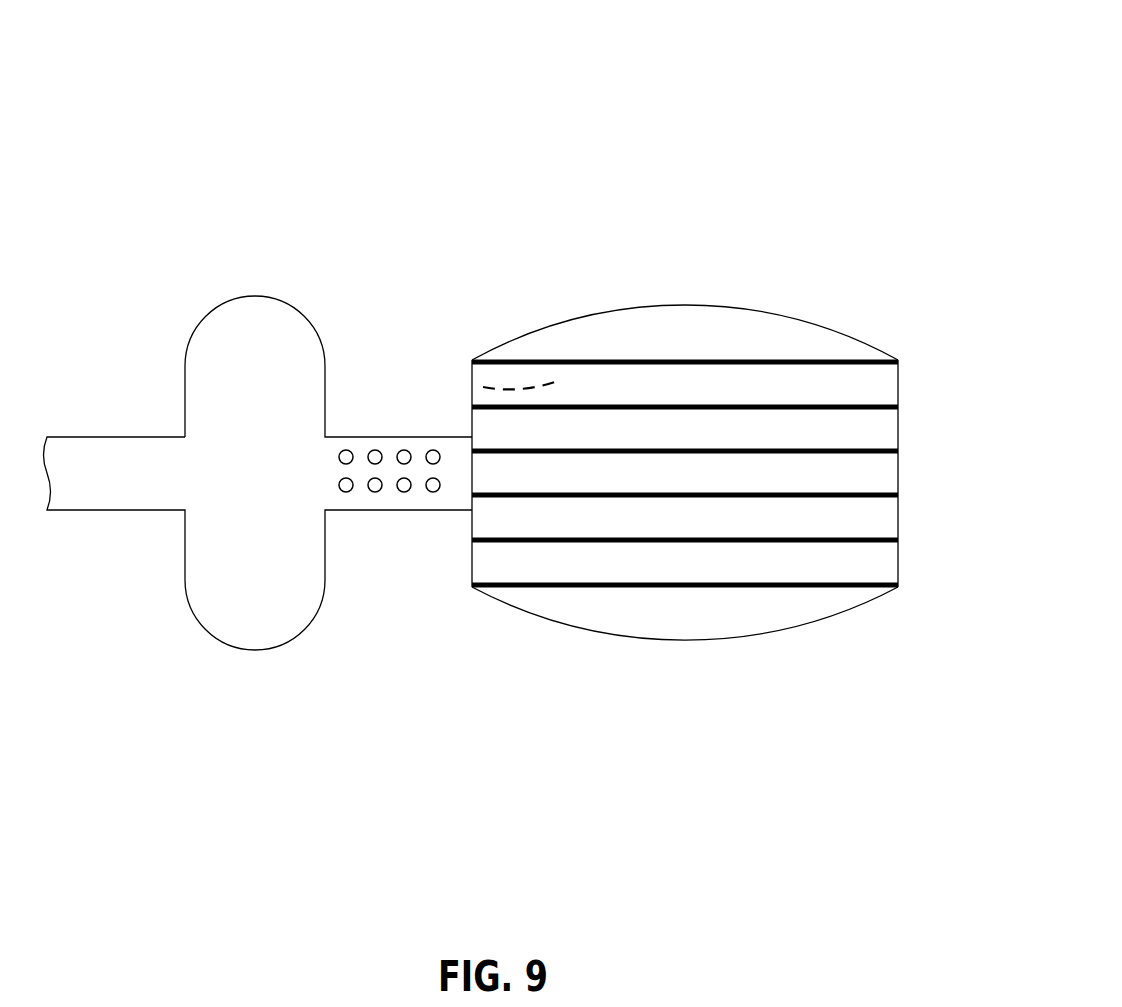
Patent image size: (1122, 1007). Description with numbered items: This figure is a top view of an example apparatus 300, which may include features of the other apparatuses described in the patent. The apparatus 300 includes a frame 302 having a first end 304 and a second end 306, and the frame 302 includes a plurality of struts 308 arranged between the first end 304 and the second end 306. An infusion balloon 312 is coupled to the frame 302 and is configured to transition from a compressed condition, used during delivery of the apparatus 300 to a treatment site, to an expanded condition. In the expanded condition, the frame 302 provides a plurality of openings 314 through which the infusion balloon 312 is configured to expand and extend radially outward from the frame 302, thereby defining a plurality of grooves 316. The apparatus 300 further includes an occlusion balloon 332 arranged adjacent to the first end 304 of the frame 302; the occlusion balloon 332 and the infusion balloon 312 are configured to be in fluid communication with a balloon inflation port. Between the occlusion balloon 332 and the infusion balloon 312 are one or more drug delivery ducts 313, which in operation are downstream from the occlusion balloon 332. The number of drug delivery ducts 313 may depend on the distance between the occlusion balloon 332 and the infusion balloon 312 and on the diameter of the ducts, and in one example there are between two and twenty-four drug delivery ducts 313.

The apparatus 300 is at (738, 104).
The frame 302 is at (898, 425).
The first end 304 is at (463, 554).
The second end 306 is at (908, 512).
The struts 308 is at (667, 350).
The infusion balloon 312 is at (757, 328).
The drug delivery ducts 313 is at (398, 436).
The openings 314 is at (480, 385).
The grooves 316 is at (870, 388).
The occlusion balloon 332 is at (255, 294).